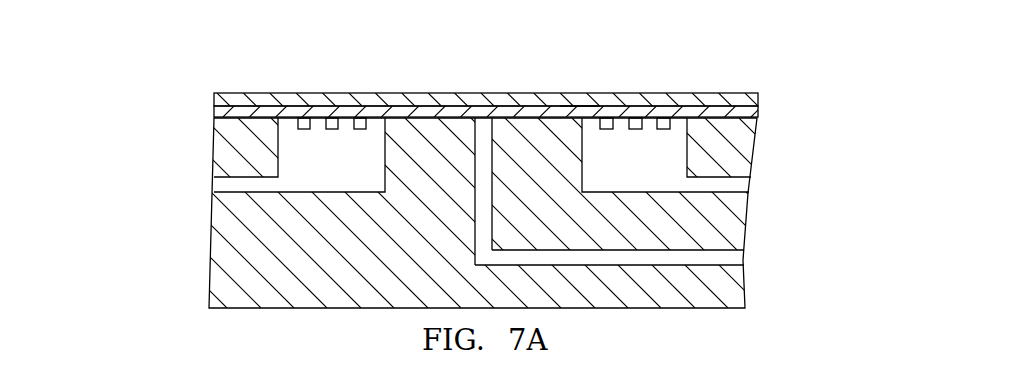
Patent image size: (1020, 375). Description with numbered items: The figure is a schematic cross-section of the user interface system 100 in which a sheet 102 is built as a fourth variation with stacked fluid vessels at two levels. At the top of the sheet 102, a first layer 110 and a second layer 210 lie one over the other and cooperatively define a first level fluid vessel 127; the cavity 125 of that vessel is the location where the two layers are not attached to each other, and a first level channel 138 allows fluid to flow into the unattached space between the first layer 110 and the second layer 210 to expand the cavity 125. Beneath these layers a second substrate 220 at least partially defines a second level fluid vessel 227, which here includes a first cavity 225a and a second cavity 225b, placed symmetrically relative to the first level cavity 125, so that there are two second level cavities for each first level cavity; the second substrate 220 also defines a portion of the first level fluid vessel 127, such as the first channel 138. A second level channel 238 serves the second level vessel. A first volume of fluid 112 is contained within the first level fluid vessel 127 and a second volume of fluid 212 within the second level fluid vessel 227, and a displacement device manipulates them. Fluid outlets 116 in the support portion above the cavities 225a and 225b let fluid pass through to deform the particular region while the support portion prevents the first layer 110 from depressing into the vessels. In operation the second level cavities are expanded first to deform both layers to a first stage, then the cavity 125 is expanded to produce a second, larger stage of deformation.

The user interface system 100 is at (127, 103).
The sheet 102 is at (178, 310).
The first layer 110 is at (733, 99).
The first volume of fluid 112 is at (488, 255).
The fluid outlets 116 is at (332, 120).
The cavity 125 is at (571, 101).
The first level fluid vessel 127 is at (483, 122).
The first level channel 138 is at (228, 186).
The second layer 210 is at (742, 108).
The second volume of fluid 212 is at (367, 182).
The second substrate 220 is at (723, 222).
The first cavity 225a is at (355, 175).
The second cavity 225b is at (660, 175).
The second level fluid vessel 227 is at (283, 178).
The second level channel 238 is at (780, 172).